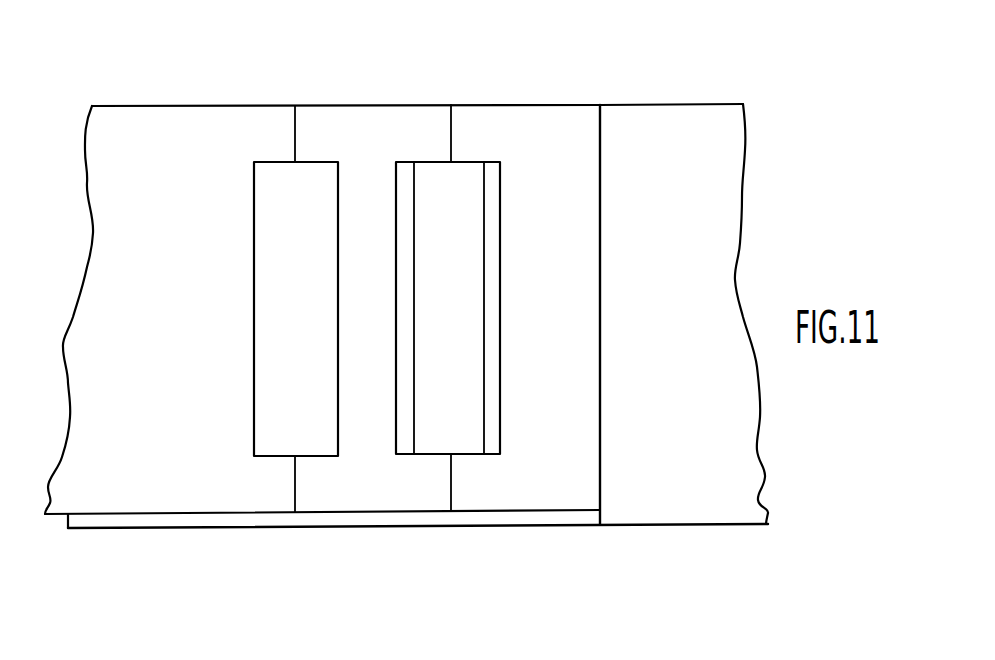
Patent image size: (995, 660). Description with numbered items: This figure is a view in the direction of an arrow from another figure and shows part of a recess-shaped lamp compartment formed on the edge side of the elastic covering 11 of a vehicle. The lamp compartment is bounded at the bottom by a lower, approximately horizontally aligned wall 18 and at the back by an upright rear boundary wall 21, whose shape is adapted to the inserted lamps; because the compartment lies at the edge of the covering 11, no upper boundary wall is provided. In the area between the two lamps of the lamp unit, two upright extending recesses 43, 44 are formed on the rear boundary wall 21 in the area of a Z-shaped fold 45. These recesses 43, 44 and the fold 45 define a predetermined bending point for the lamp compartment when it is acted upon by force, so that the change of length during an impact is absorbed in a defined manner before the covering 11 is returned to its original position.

The elastic covering 11 is at (723, 540).
The lower wall 18 is at (526, 520).
The rear boundary wall 21 is at (717, 226).
The recess 43 is at (278, 201).
The recess 44 is at (470, 204).
The Z-shaped fold 45 is at (371, 130).